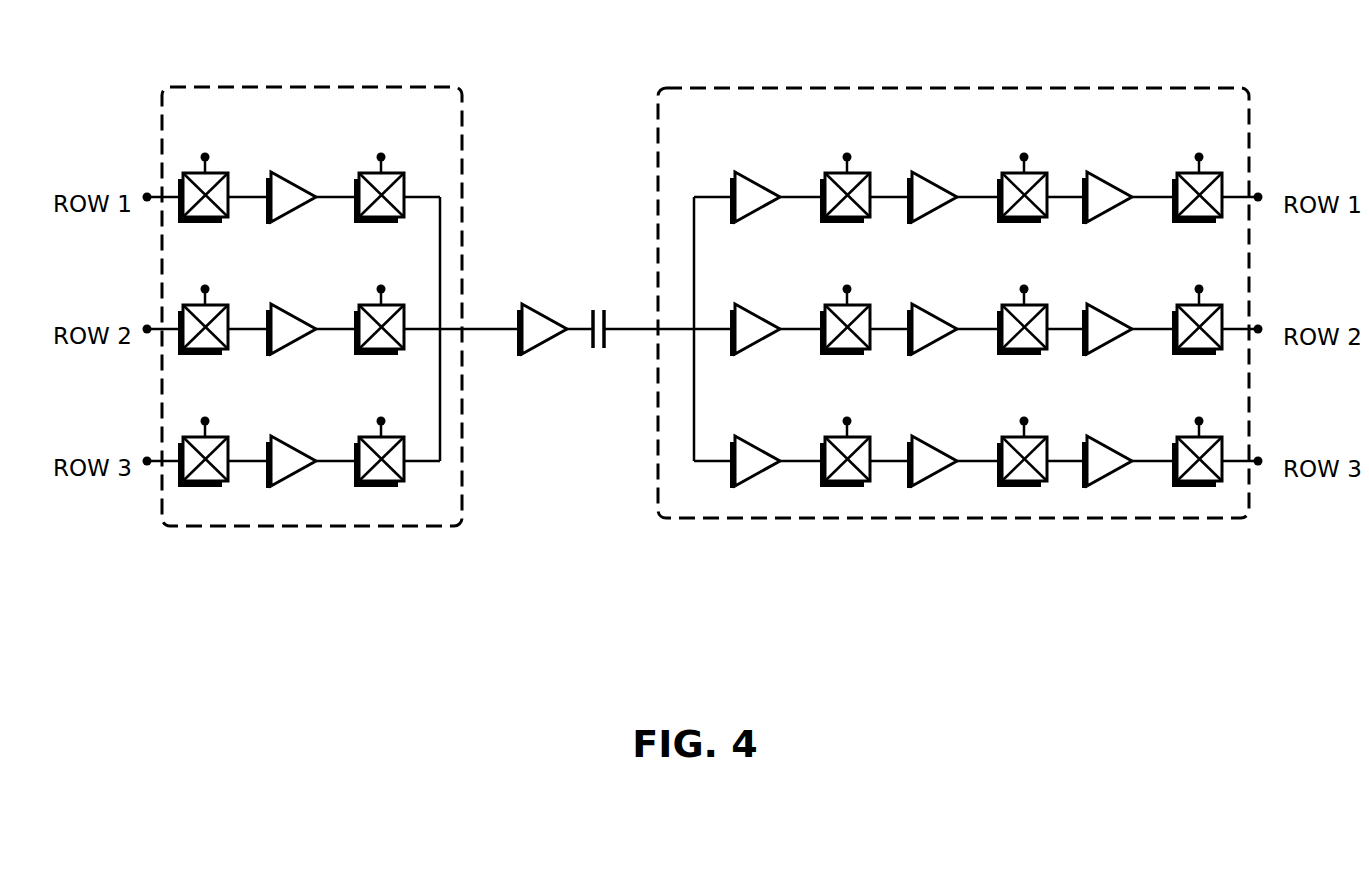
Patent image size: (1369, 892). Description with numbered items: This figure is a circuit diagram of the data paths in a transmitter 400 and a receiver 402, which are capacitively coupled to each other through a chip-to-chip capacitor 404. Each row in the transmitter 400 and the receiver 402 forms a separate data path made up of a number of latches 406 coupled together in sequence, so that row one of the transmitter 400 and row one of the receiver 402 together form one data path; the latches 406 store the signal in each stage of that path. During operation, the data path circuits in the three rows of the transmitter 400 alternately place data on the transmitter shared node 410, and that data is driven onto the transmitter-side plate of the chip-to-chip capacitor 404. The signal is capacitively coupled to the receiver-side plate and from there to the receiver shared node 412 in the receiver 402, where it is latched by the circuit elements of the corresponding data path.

The transmitter 400 is at (334, 306).
The receiver 402 is at (958, 262).
The chip-to-chip capacitor 404 is at (593, 298).
The latch 406 is at (948, 150).
The transmitter shared node 410 is at (430, 475).
The receiver shared node 412 is at (695, 475).